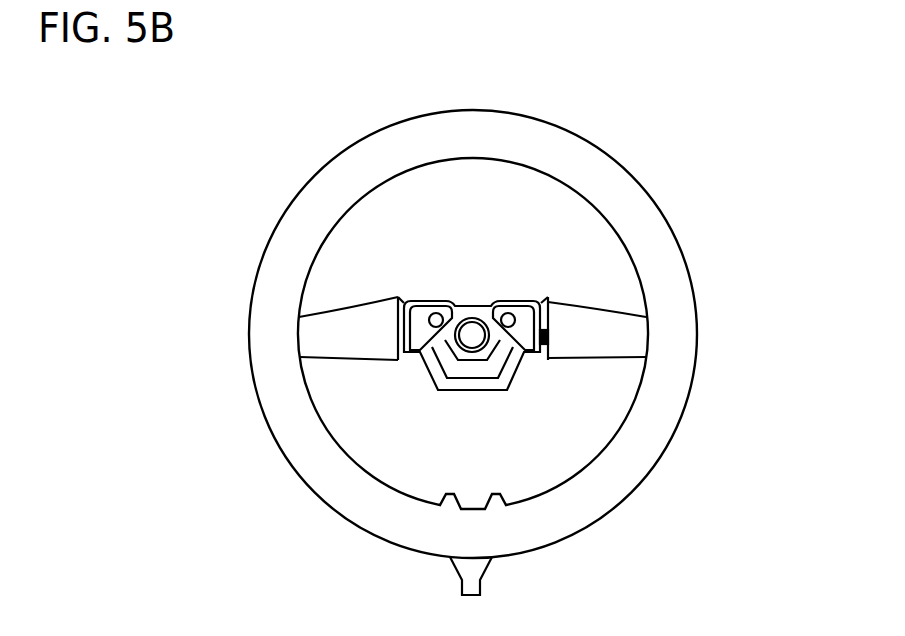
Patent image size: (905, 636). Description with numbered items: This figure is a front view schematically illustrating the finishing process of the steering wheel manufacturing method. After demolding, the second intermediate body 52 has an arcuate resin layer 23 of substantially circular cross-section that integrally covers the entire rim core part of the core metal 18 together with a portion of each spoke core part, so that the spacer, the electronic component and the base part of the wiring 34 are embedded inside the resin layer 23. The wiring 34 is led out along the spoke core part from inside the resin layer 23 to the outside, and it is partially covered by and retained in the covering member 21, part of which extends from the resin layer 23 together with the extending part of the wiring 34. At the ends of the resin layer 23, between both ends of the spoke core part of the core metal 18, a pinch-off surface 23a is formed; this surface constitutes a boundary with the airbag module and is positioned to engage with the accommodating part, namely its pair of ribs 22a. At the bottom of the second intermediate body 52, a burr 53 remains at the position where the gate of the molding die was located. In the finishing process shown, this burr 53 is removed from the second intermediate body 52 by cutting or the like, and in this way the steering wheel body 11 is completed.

The steering wheel body 11 is at (644, 153).
The core metal 18 is at (427, 362).
The covering member 21 is at (535, 355).
The ribs 22a is at (547, 332).
The resin layer 23 is at (685, 262).
The pinch-off surface 23a is at (399, 302).
The wiring 34 is at (518, 303).
The second intermediate body 52 is at (513, 100).
The burr 53 is at (480, 583).